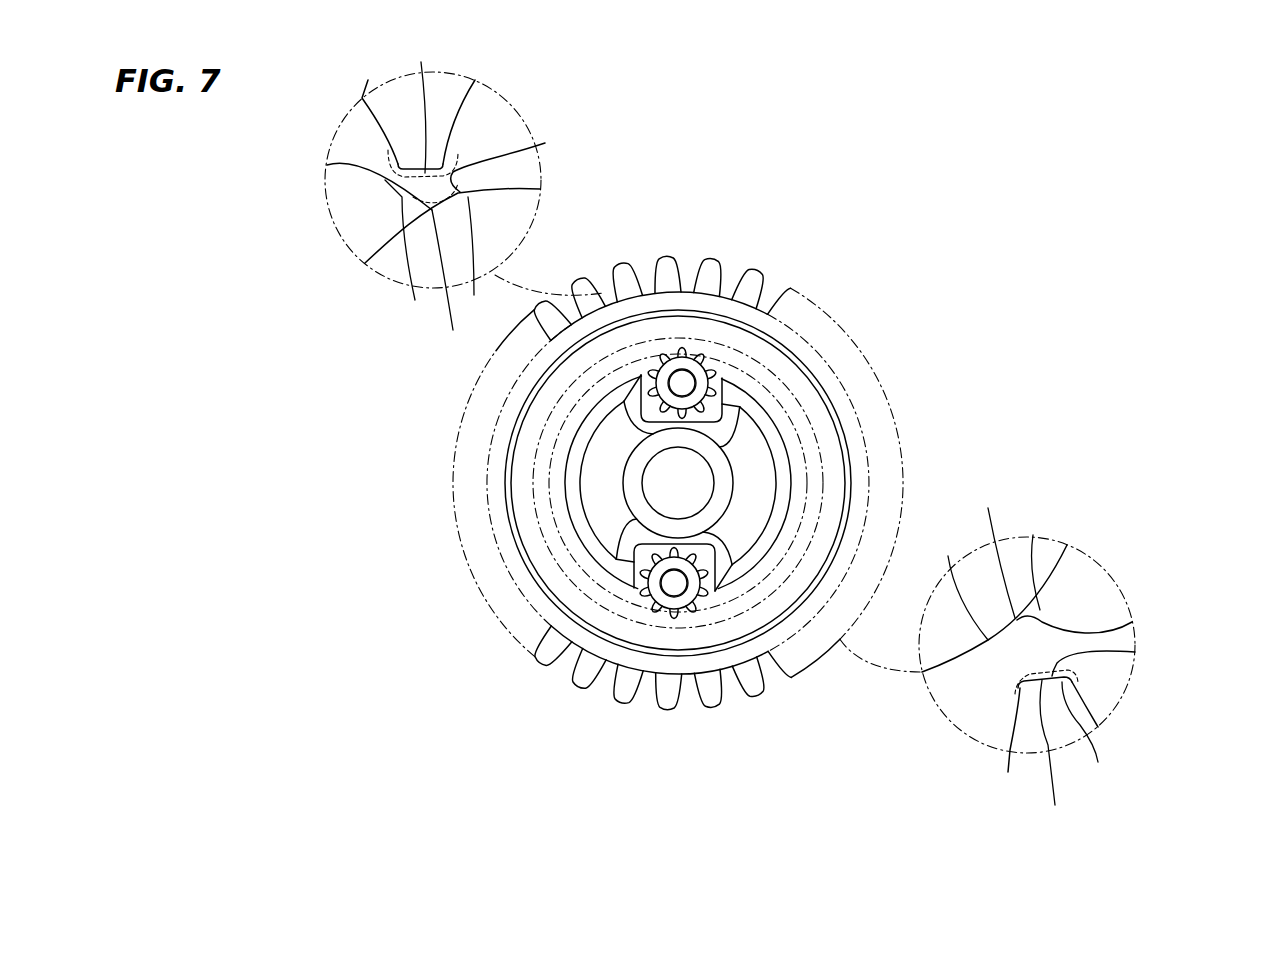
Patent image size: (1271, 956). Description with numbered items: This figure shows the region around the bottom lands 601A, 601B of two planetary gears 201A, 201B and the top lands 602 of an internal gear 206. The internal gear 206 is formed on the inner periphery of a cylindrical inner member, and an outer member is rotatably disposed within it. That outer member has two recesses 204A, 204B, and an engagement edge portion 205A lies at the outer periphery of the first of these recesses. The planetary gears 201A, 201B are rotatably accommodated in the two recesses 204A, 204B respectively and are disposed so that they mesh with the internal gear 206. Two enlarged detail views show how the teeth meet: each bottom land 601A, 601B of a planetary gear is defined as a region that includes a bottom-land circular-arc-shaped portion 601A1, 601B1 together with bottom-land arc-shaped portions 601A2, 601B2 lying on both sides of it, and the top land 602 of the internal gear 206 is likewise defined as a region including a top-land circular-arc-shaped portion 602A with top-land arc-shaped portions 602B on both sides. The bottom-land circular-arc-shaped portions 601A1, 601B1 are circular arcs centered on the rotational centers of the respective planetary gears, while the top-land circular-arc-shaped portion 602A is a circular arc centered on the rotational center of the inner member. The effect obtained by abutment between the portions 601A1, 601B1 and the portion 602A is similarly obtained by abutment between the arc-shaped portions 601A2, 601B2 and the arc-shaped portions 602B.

The planetary gear 201A is at (683, 382).
The planetary gear 201B is at (674, 584).
The recess 204A is at (722, 390).
The recess 204B is at (638, 548).
The engagement edge portion 205A is at (640, 592).
The internal gear 206 is at (715, 590).
The bottom land 601A is at (540, 150).
The bottom-land circular-arc-shaped portion 601A1 is at (461, 284).
The bottom-land arc-shaped portion 601A2 is at (454, 252).
The bottom land 601B is at (1062, 628).
The bottom-land circular-arc-shaped portion 601B1 is at (985, 550).
The bottom-land arc-shaped portion 601B2 is at (997, 574).
The top land 602 is at (1135, 652).
The top-land circular-arc-shaped portion 602A is at (740, 437).
The top-land arc-shaped portion 602B is at (728, 424).